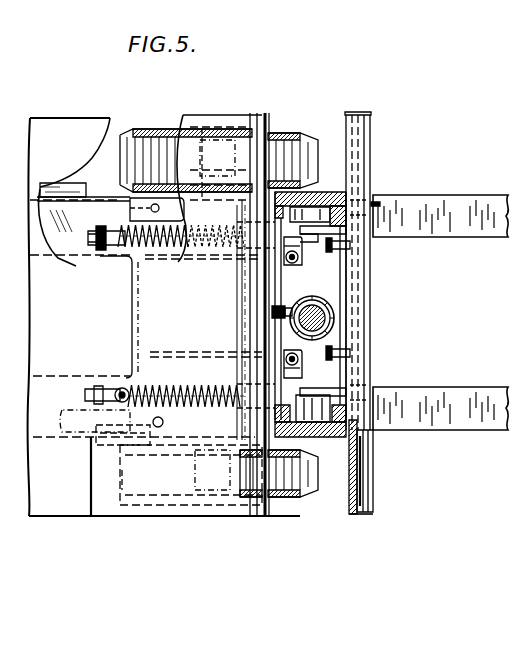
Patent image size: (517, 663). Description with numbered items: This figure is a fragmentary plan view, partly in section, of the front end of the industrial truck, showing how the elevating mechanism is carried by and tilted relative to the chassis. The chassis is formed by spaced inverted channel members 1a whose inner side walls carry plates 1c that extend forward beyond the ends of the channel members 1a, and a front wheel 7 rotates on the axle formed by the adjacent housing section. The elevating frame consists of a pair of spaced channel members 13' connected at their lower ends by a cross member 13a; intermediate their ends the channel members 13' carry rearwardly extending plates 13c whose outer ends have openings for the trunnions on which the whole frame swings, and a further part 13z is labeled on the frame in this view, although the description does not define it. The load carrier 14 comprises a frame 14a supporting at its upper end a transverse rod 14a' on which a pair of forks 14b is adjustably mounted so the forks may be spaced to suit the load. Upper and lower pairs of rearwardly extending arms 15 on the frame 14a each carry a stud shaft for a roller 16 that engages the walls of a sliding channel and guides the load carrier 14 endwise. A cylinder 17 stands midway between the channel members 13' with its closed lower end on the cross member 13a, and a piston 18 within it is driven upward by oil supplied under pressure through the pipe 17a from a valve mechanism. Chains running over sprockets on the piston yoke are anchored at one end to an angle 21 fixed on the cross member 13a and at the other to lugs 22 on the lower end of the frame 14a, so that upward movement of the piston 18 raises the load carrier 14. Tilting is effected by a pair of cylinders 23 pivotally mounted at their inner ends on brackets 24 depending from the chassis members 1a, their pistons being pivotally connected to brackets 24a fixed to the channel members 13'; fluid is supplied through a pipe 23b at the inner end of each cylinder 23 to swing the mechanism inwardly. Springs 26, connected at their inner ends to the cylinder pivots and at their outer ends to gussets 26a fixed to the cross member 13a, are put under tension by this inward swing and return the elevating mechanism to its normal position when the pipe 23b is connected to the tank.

The inverted channel member 1a is at (63, 122).
The plate 1c is at (78, 190).
The front wheel 7 is at (313, 500).
The channel member 13' is at (375, 271).
The cross member 13a is at (352, 353).
The plate 13c is at (336, 438).
The stop 13z is at (380, 204).
The load carrier 14 is at (377, 471).
The frame 14a is at (347, 477).
The transverse rod 14a' is at (389, 471).
The fork 14b is at (445, 230).
The arm 15 is at (322, 250).
The roller 16 is at (322, 192).
The cylinder 17 is at (336, 314).
The pipe 17a is at (272, 313).
The piston 18 is at (340, 322).
The angle 21 is at (302, 378).
The lug 22 is at (342, 250).
The cylinder 23 is at (178, 195).
The fluid supply pipe 23b is at (150, 200).
The bracket 24 is at (80, 222).
The bracket 24a is at (145, 450).
The spring 26 is at (140, 258).
The gusset 26a is at (230, 262).